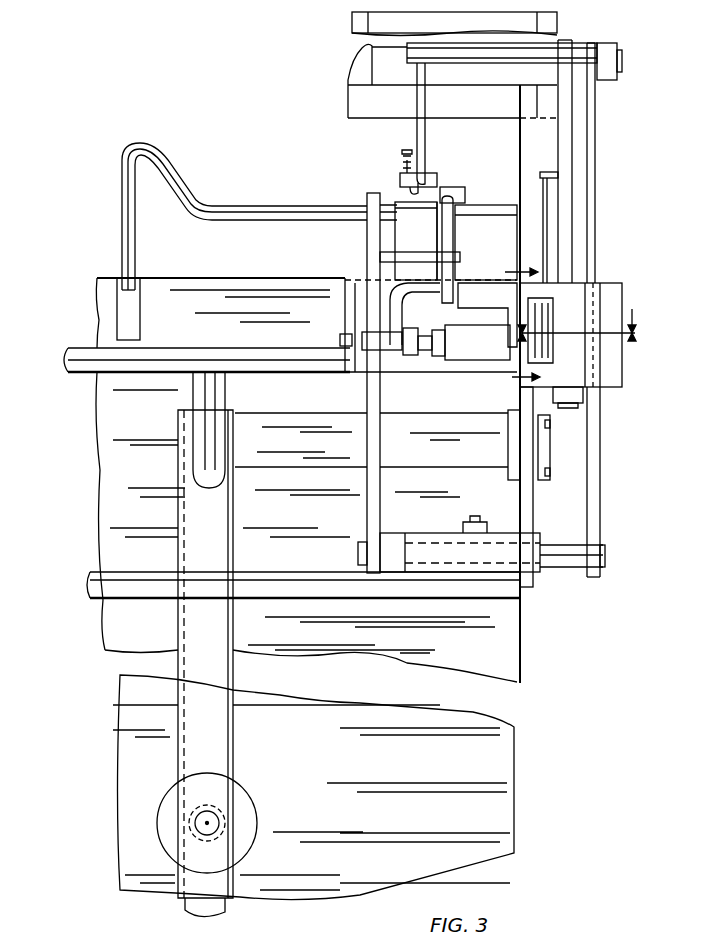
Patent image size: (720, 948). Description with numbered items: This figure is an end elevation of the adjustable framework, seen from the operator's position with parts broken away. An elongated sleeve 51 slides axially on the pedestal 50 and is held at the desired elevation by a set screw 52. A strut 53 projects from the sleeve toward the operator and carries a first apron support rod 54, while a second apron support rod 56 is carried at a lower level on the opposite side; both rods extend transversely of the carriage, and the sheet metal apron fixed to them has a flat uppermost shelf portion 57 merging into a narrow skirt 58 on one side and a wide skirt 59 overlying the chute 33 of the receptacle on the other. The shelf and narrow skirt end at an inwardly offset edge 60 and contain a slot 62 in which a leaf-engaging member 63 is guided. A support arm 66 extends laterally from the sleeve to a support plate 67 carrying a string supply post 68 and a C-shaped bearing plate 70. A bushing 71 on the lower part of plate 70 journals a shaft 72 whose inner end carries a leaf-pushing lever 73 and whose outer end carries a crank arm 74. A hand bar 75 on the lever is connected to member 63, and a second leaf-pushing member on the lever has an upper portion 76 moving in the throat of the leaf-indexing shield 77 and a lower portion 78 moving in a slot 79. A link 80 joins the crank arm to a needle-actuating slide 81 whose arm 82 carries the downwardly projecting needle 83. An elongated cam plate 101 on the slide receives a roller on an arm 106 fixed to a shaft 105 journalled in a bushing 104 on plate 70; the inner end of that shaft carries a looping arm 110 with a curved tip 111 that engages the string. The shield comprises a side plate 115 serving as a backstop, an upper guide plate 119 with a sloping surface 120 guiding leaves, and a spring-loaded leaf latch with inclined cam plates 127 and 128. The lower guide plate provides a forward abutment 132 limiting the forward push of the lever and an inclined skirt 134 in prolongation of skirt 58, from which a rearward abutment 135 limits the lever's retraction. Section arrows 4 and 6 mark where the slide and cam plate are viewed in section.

The needle-actuating slide 81 is at (592, 42).
The link 80 is at (596, 212).
The laterally extending arm 82 is at (515, 57).
The needle 83 is at (425, 110).
The sloping surface 120 is at (437, 178).
The string supply post 68 is at (530, 153).
The cam plate 101 is at (537, 190).
The bar 75 is at (262, 215).
The leaf-engaging member 63 is at (132, 262).
The leaf-pushing lever 73 is at (392, 452).
The upper guide plate 119 is at (435, 222).
The cam plate 127 is at (408, 238).
The cam plate 128 is at (442, 268).
The upper portion of second leaf-pushing member 76 is at (453, 240).
The side plate 115 is at (510, 230).
The leaf-indexing shield 77 is at (494, 262).
The slot 79 is at (475, 265).
The section line 6 is at (515, 324).
The lower portion of second leaf-pushing member 78 is at (451, 297).
The inclined skirt 134 is at (502, 305).
The shaft 105 is at (425, 357).
The bushing 104 is at (482, 362).
The curved tip 111 is at (383, 297).
The looping arm 110 is at (410, 313).
The inwardly offset edge 60 is at (338, 340).
The forward abutment 132 is at (350, 276).
The rearward abutment 135 is at (350, 378).
The arm 106 is at (537, 355).
The section line 4 is at (578, 322).
The narrow skirt 58 is at (92, 308).
The shelf portion 57 is at (236, 280).
The slot 62 is at (140, 324).
The first apron support rod 54 is at (66, 360).
The wide skirt 59 is at (100, 497).
The second apron support rod 56 is at (165, 580).
The strut 53 is at (218, 397).
The support arm 66 is at (298, 418).
The sleeve 51 is at (184, 757).
The set screw 52 is at (213, 823).
The foot 50 is at (218, 915).
The chute 33 is at (128, 806).
The support plate 67 is at (508, 446).
The bearing plate 70 is at (520, 500).
The bushing 71 is at (452, 570).
The shaft 72 is at (354, 558).
The crank arm 74 is at (602, 520).